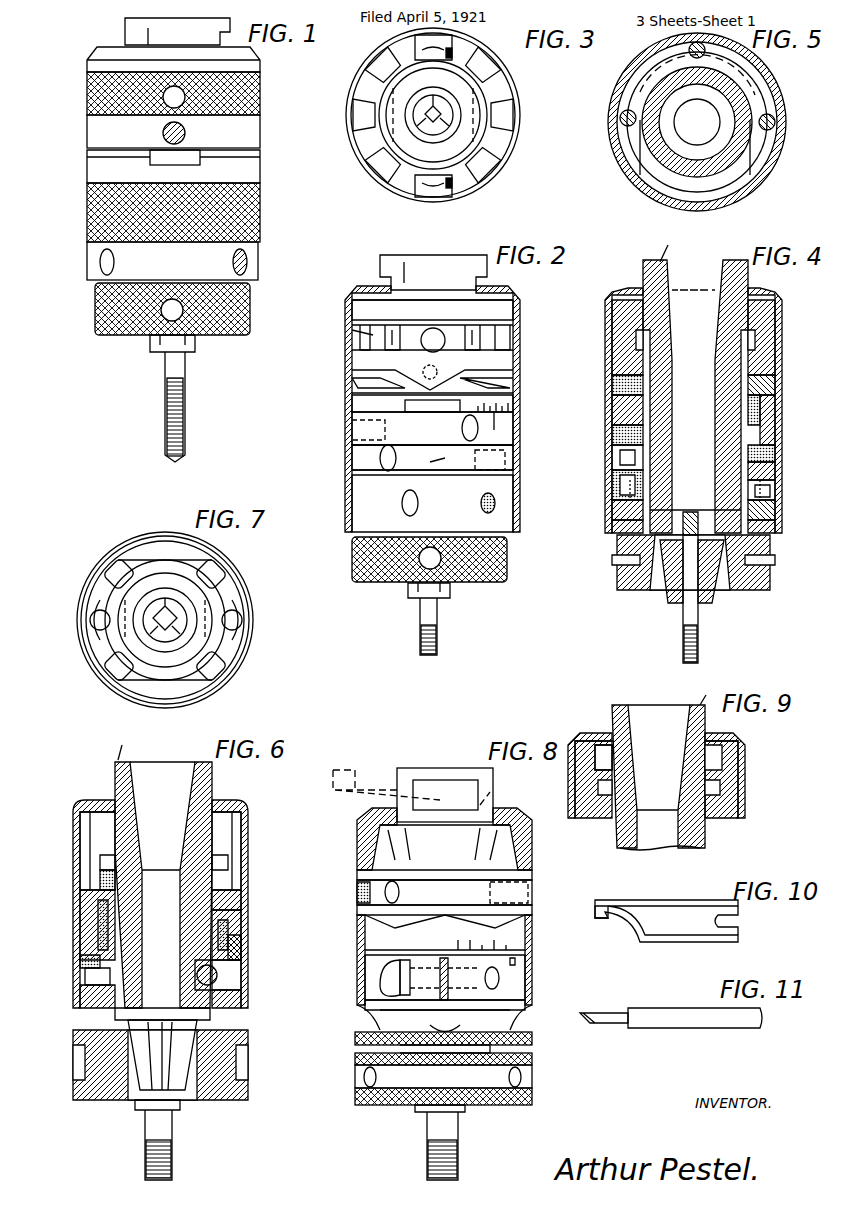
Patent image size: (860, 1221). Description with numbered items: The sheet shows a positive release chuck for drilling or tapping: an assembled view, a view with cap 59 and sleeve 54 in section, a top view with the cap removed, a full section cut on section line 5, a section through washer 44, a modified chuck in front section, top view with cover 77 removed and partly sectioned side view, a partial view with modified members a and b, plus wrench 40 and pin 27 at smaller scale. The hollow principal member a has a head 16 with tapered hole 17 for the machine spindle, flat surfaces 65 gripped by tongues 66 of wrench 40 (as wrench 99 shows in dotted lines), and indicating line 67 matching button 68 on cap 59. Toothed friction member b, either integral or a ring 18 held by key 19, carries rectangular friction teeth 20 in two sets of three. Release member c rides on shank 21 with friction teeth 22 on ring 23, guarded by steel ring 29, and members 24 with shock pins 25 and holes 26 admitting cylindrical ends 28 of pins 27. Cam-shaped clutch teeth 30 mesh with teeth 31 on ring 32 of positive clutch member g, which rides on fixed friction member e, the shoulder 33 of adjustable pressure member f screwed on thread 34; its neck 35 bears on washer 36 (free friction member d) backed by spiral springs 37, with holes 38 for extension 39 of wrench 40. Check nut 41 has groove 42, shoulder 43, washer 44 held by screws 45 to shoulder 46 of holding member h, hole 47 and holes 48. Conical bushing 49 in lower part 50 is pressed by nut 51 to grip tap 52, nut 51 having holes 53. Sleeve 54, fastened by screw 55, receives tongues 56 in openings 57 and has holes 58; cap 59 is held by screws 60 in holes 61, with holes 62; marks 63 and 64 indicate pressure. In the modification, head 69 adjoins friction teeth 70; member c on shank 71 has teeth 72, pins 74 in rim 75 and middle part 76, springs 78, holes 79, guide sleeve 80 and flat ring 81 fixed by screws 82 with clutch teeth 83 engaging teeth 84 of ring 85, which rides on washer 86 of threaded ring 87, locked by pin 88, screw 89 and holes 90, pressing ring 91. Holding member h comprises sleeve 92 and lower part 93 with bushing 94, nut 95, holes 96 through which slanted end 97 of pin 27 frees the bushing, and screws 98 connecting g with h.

In FIG. 4, the head 16 is at (648, 268).
In FIG. 9, the head 16 is at (617, 708).
In FIG. 4, the tapered hole 17 is at (722, 268).
In FIG. 9, the tapered hole 17 is at (632, 720).
In FIG. 9, the ring 18 is at (605, 745).
In FIG. 9, the key 19 is at (722, 748).
In FIG. 3, the friction teeth 20 is at (452, 30).
In FIG. 4, the friction teeth 20 is at (625, 290).
In FIG. 4, the shank 21 is at (775, 330).
In FIG. 9, the shank 21 is at (700, 838).
In FIG. 3, the friction teeth 22 is at (505, 92).
In FIG. 2, the friction teeth 22 is at (495, 335).
In FIG. 2, the ring 23 is at (505, 358).
In FIG. 3, the members 24 is at (418, 40).
In FIG. 3, the pin 25 is at (448, 55).
In FIG. 3, the holes 26 is at (448, 190).
In FIG. 2, the holes 26 is at (433, 328).
In FIG. 11, the pin 27 is at (683, 1025).
In FIG. 11, the cylindrical end 28 is at (620, 1023).
In FIG. 2, the steel ring 29 is at (352, 311).
In FIG. 4, the steel ring 29 is at (612, 322).
In FIG. 2, the positive clutch teeth 30 is at (395, 370).
In FIG. 2, the positive clutch teeth 31 is at (360, 382).
In FIG. 2, the ring 32 is at (352, 402).
In FIG. 2, the shoulder 33 is at (500, 437).
In FIG. 4, the shoulder 33 is at (775, 468).
In FIG. 4, the thread 34 is at (612, 380).
In FIG. 4, the neck 35 is at (612, 400).
In FIG. 4, the washer 36 is at (775, 380).
In FIG. 4, the spiral springs 37 is at (775, 400).
In FIG. 2, the holes 38 is at (442, 463).
In FIG. 4, the holes 38 is at (612, 450).
In FIG. 10, the extension 39 is at (605, 917).
In FIG. 10, the wrench 40 is at (668, 903).
In FIG. 2, the check nut 41 is at (352, 452).
In FIG. 4, the groove 42 is at (612, 503).
In FIG. 4, the shoulder 43 is at (612, 525).
In FIG. 5, the washer 44 is at (636, 140).
In FIG. 5, the screws 45 is at (620, 116).
In FIG. 4, the shoulder 46 is at (775, 528).
In FIG. 4, the hole 47 is at (612, 470).
In FIG. 2, the holes 48 is at (380, 458).
In FIG. 4, the conical bushing 49 is at (712, 598).
In FIG. 4, the lower part 50 is at (748, 555).
In FIG. 2, the nut 51 is at (490, 580).
In FIG. 2, the tap 52 is at (437, 628).
In FIG. 4, the tap 52 is at (683, 625).
In FIG. 1, the holes 53 is at (190, 327).
In FIG. 2, the holes 53 is at (440, 590).
In FIG. 1, the sleeve 54 is at (260, 218).
In FIG. 2, the sleeve 54 is at (362, 442).
In FIG. 1, the screw 55 is at (247, 258).
In FIG. 1, the tongues 56 is at (200, 157).
In FIG. 2, the tongues 56 is at (405, 408).
In FIG. 1, the openings 57 is at (198, 165).
In FIG. 1, the holes 58 is at (100, 262).
In FIG. 2, the holes 58 is at (402, 512).
In FIG. 1, the protection cap 59 is at (260, 105).
In FIG. 2, the protection cap 59 is at (512, 300).
In FIG. 1, the screws 60 is at (186, 133).
In FIG. 2, the holes 61 is at (438, 372).
In FIG. 1, the holes 62 is at (180, 97).
In FIG. 2, the indicating marks 63 is at (508, 408).
In FIG. 2, the marks 64 is at (496, 420).
In FIG. 2, the flat surfaces 65 is at (380, 268).
In FIG. 10, the tongues 66 is at (738, 910).
In FIG. 1, the indicating line 67 is at (148, 40).
In FIG. 2, the indicating line 67 is at (404, 272).
In FIG. 1, the button 68 is at (134, 45).
In FIG. 6, the head 69 is at (170, 768).
In FIG. 8, the head 69 is at (418, 778).
In FIG. 7, the conical friction teeth 70 is at (158, 562).
In FIG. 6, the shank 71 is at (100, 862).
In FIG. 7, the conical friction teeth 72 is at (108, 568).
In FIG. 7, the pins 74 is at (92, 620).
In FIG. 6, the pins 74 is at (95, 840).
In FIG. 6, the rim 75 is at (232, 865).
In FIG. 6, the middle part 76 is at (241, 905).
In FIG. 6, the cover 77 is at (225, 806).
In FIG. 6, the spiral springs 78 is at (100, 882).
In FIG. 8, the holes 79 is at (510, 890).
In FIG. 6, the sleeve 80 is at (241, 945).
In FIG. 6, the flat ring 81 is at (241, 925).
In FIG. 8, the flat ring 81 is at (520, 912).
In FIG. 8, the screws 82 is at (360, 892).
In FIG. 8, the positive clutch teeth 83 is at (357, 912).
In FIG. 8, the clutch teeth 84 is at (500, 920).
In FIG. 6, the ring 85 is at (225, 968).
In FIG. 8, the ring 85 is at (520, 962).
In FIG. 8, the washer 86 is at (365, 962).
In FIG. 8, the threaded ring 87 is at (505, 972).
In FIG. 6, the pin 88 is at (80, 962).
In FIG. 8, the screw 89 is at (395, 980).
In FIG. 6, the holes 90 is at (88, 978).
In FIG. 6, the ring 91 is at (80, 918).
In FIG. 6, the sleeve 92 is at (241, 990).
In FIG. 8, the sleeve 92 is at (528, 995).
In FIG. 8, the lower part 93 is at (365, 1028).
In FIG. 6, the bushing 94 is at (180, 1100).
In FIG. 6, the nut 95 is at (248, 1100).
In FIG. 6, the holes 96 is at (90, 1028).
In FIG. 11, the slanted end 97 is at (599, 1022).
In FIG. 8, the screws 98 is at (360, 940).
In FIG. 8, the wrench 99 is at (352, 770).
In FIG. 4, the principal member a is at (667, 244).
In FIG. 6, the principal member a is at (113, 746).
In FIG. 9, the principal member a is at (706, 689).
In FIG. 4, the toothed friction member b is at (760, 300).
In FIG. 8, the toothed friction member b is at (385, 836).
In FIG. 9, the toothed friction member b is at (588, 740).
In FIG. 2, the release member c is at (355, 339).
In FIG. 4, the release member c is at (775, 445).
In FIG. 6, the release member c is at (232, 888).
In FIG. 8, the release member c is at (530, 860).
In FIG. 4, the free friction member d is at (775, 392).
In FIG. 6, the free friction member d is at (85, 940).
In FIG. 2, the fixed friction member e is at (558, 428).
In FIG. 6, the fixed friction member e is at (291, 985).
In FIG. 8, the fixed friction member e is at (365, 975).
In FIG. 6, the adjustable pressure member f is at (80, 998).
In FIG. 8, the adjustable pressure member f is at (525, 985).
In FIG. 2, the positive clutch member g is at (352, 393).
In FIG. 4, the positive clutch member g is at (612, 428).
In FIG. 6, the positive clutch member g is at (250, 918).
In FIG. 2, the tool or machine-part holding member h is at (495, 503).
In FIG. 4, the tool or machine-part holding member h is at (612, 545).
In FIG. 6, the tool or machine-part holding member h is at (235, 1005).
In FIG. 4, the section line 5- 5 is at (612, 480).